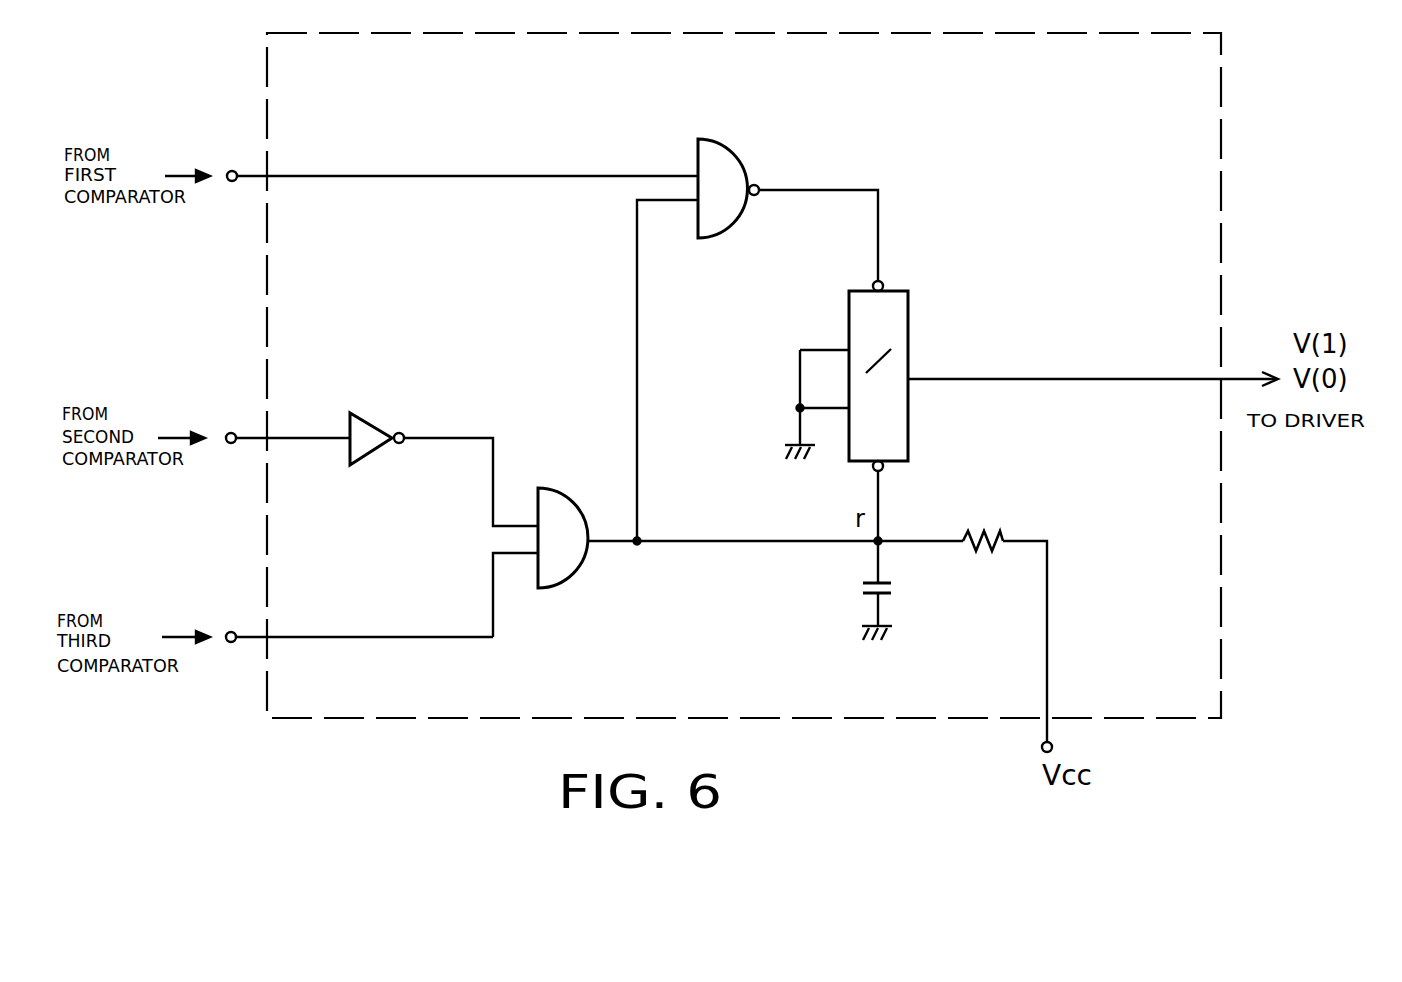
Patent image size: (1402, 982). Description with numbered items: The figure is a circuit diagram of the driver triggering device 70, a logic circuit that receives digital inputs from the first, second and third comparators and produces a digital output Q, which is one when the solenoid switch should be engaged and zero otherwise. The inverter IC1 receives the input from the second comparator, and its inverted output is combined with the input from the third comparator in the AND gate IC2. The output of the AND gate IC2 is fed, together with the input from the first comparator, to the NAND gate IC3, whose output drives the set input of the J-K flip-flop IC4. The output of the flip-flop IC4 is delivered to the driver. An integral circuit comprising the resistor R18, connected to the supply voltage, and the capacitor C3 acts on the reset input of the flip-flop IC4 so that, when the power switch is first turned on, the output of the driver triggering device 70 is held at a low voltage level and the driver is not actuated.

The driver triggering device 70 is at (1221, 94).
The inverter IC1 is at (372, 422).
The AND gate IC2 is at (558, 559).
The NAND gate IC3 is at (721, 172).
The J-K flip-flop IC4 is at (861, 392).
The resistor R18 is at (983, 526).
The capacitor C3 is at (863, 590).